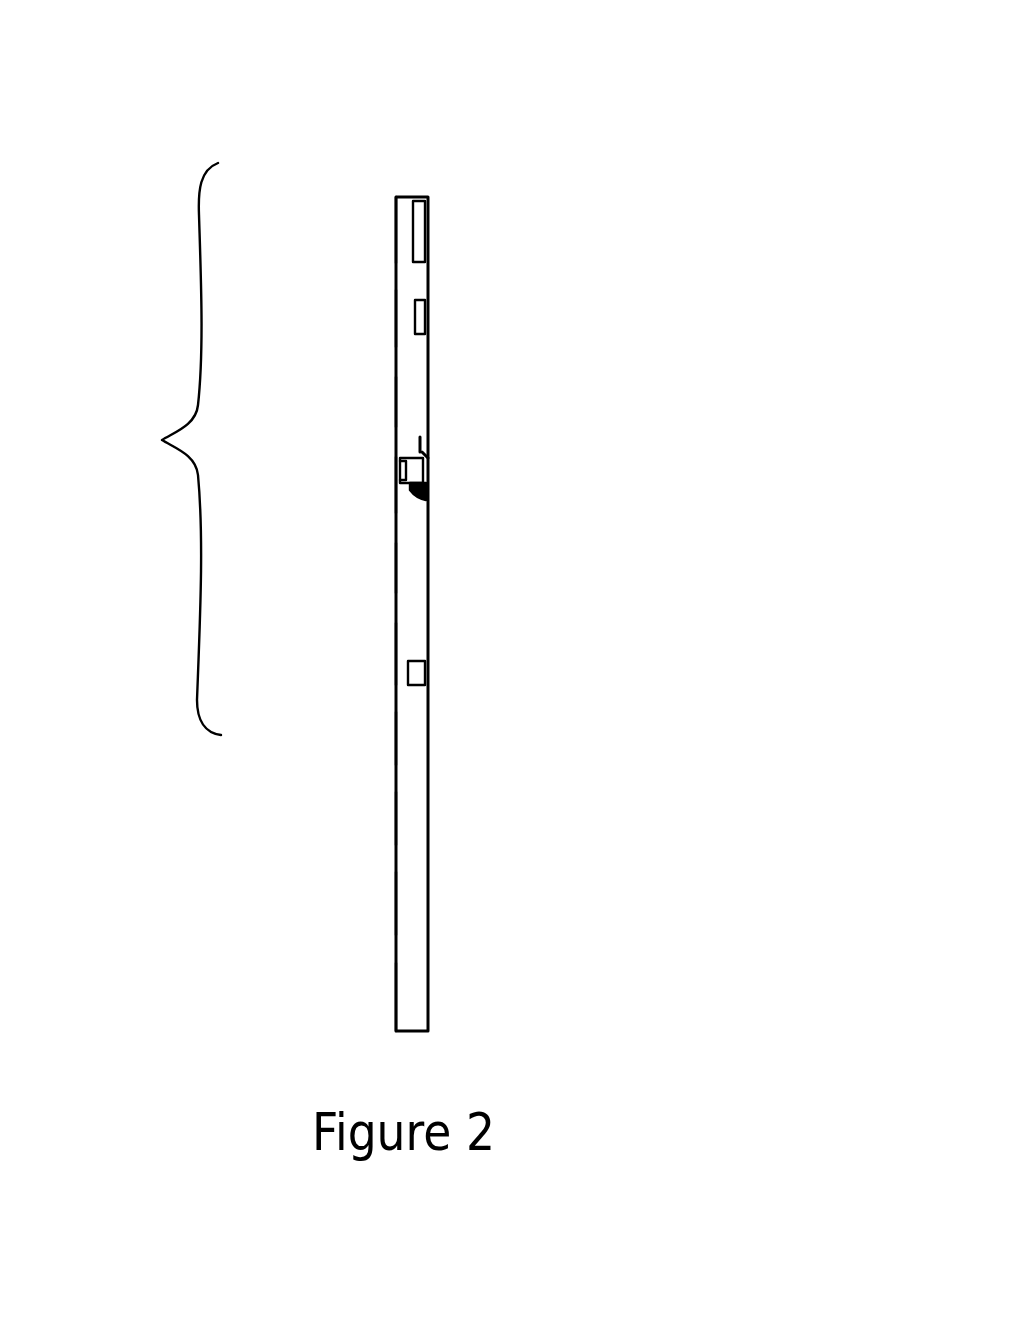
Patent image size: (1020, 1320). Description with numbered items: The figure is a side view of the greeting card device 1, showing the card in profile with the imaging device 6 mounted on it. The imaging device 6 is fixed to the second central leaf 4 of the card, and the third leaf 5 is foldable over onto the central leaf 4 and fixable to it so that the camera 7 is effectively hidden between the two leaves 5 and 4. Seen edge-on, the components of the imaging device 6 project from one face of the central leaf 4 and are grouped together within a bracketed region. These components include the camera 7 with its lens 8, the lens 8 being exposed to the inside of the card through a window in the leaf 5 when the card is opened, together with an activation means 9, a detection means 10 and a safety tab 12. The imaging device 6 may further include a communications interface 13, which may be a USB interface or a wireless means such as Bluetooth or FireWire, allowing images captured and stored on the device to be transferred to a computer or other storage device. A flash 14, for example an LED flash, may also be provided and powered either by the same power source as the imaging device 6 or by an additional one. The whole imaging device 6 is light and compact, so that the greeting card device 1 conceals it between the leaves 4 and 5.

The greeting card device 1 is at (822, 566).
The second central leaf 4 is at (423, 983).
The third leaf 5 is at (395, 997).
The imaging device 6 is at (150, 205).
The camera 7 is at (424, 507).
The lens 8 is at (399, 471).
The activation means 9 is at (428, 455).
The detection means 10 is at (398, 673).
The safety tab 12 is at (411, 443).
The communications interface 13 is at (399, 233).
The flash 14 is at (399, 315).